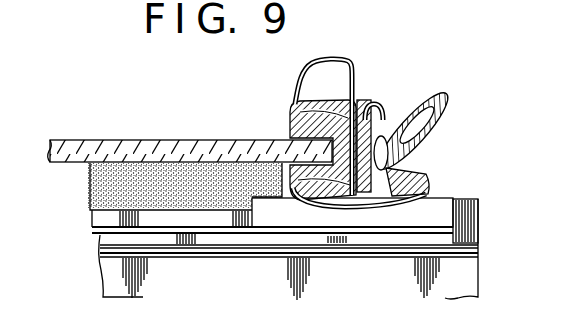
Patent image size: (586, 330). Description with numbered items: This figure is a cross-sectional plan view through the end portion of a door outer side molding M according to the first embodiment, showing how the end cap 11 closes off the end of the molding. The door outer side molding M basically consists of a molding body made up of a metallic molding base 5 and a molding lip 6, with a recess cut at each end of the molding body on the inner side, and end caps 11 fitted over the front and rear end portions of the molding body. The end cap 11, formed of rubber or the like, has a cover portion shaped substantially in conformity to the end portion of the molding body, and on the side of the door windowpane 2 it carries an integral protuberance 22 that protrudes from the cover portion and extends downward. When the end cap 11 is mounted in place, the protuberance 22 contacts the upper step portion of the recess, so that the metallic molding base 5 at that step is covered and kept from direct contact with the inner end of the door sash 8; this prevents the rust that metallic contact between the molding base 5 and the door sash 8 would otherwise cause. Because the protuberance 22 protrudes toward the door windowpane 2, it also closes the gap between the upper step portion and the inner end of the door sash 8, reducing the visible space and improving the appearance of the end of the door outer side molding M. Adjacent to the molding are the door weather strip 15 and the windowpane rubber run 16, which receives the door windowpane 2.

The door windowpane 2 is at (160, 140).
The molding base 5 is at (205, 222).
The molding lip 6 is at (90, 180).
The door sash 8 is at (353, 73).
The end cap 11 is at (438, 208).
The door weather strip 15 is at (447, 108).
The windowpane rubber run 16 is at (288, 124).
The protuberance 22 is at (290, 190).
The door outer side molding M is at (88, 221).